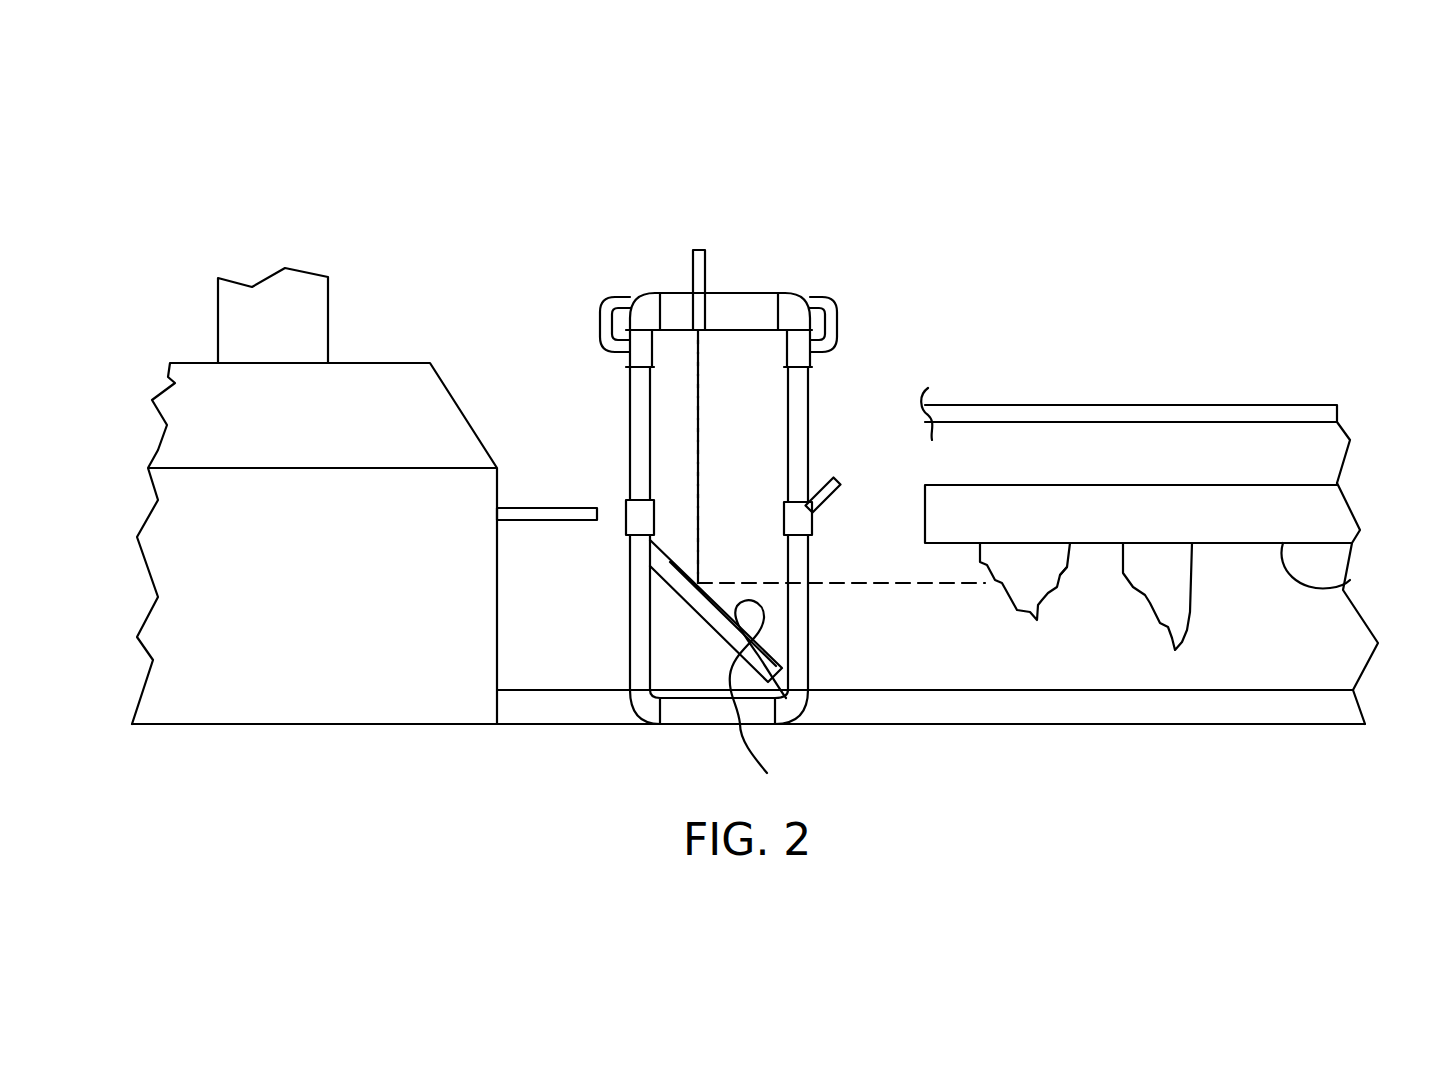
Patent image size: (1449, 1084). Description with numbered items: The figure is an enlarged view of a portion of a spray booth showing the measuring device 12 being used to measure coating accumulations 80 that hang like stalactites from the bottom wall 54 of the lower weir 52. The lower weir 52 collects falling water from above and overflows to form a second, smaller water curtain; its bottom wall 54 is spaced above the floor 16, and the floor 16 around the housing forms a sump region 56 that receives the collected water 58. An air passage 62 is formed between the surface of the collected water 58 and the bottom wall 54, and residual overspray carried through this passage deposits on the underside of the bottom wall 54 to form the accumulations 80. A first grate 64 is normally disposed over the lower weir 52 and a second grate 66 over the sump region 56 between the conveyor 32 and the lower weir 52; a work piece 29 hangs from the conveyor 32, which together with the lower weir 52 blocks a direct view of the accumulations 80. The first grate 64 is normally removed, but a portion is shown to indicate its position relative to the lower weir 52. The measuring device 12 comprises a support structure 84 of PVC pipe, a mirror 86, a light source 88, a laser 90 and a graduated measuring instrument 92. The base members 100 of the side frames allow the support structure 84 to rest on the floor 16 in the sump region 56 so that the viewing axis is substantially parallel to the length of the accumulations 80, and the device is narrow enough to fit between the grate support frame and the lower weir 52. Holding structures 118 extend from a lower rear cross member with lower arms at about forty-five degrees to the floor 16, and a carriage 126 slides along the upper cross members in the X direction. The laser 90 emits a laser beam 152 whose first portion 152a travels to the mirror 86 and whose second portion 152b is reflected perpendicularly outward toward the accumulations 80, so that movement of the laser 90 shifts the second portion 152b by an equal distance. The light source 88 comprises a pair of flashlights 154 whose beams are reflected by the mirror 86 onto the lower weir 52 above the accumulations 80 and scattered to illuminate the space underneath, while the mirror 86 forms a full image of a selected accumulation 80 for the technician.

The measuring device 12 is at (749, 479).
The floor 16 is at (962, 722).
The work piece 29 is at (312, 312).
The conveyor 32 is at (268, 655).
The lower weir 52 is at (1092, 516).
The bottom wall 54 is at (1343, 593).
The sump region 56 is at (558, 717).
The collected water 58 is at (1243, 705).
The air passage 62 is at (922, 640).
The first grate 64 is at (1065, 405).
The second grate 66 is at (530, 552).
The coating accumulations 80 is at (1145, 597).
The support structure 84 is at (618, 433).
The mirror 86 is at (758, 703).
The light source 88 is at (840, 452).
The laser 90 is at (707, 258).
The graduated measuring instrument 92 is at (740, 325).
The base member 100 is at (712, 716).
The holding structure 118 is at (682, 607).
The carriage 126 is at (627, 282).
The laser beam 152 is at (683, 441).
The first portion of laser beam 152a is at (700, 464).
The second portion of laser beam 152b is at (905, 590).
The flashlight 154 is at (823, 505).